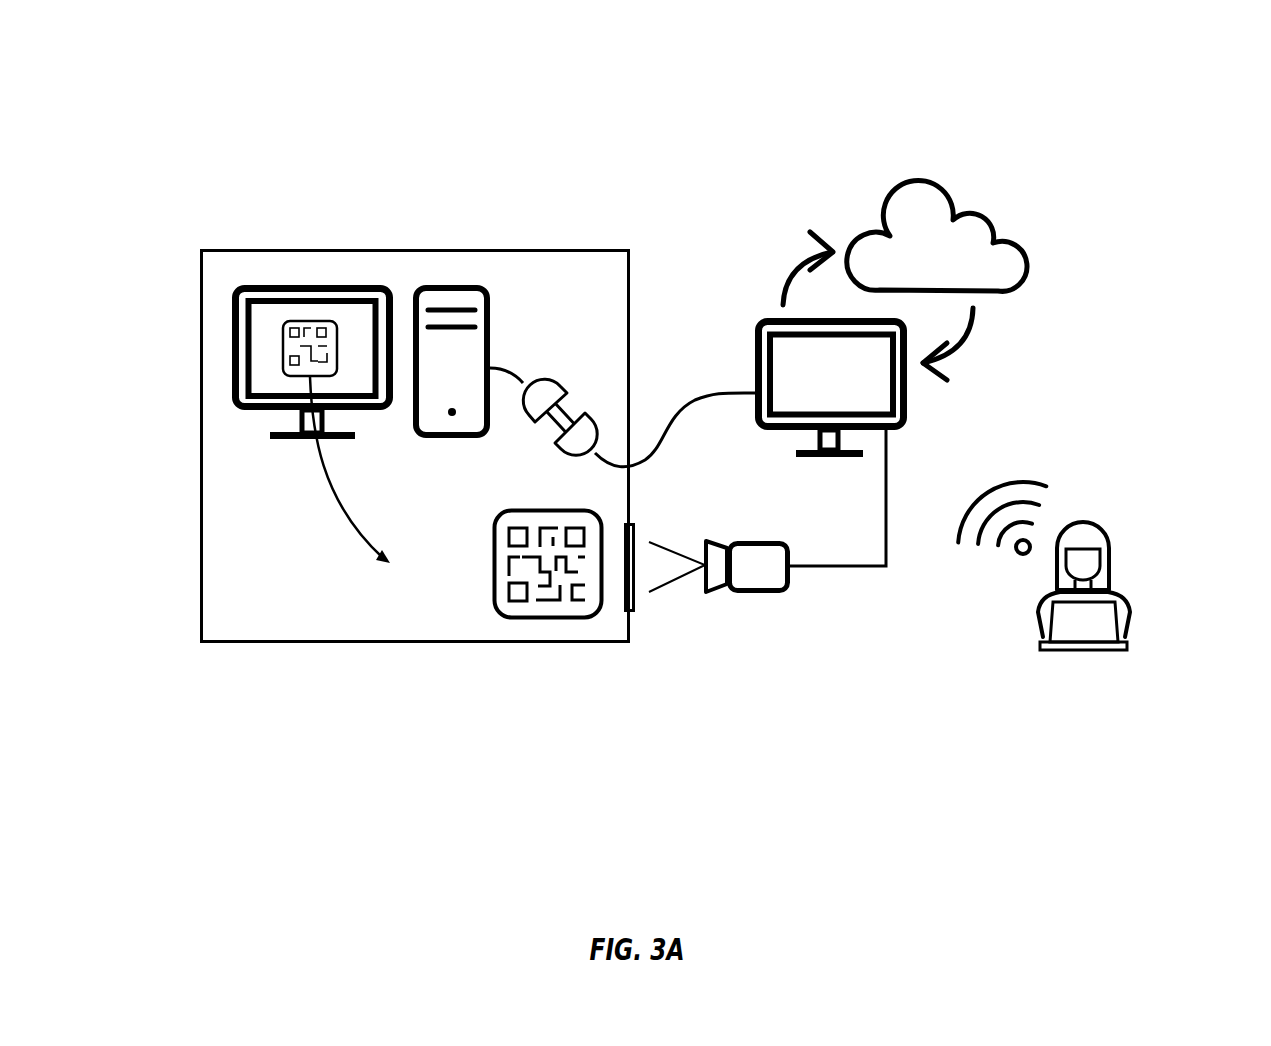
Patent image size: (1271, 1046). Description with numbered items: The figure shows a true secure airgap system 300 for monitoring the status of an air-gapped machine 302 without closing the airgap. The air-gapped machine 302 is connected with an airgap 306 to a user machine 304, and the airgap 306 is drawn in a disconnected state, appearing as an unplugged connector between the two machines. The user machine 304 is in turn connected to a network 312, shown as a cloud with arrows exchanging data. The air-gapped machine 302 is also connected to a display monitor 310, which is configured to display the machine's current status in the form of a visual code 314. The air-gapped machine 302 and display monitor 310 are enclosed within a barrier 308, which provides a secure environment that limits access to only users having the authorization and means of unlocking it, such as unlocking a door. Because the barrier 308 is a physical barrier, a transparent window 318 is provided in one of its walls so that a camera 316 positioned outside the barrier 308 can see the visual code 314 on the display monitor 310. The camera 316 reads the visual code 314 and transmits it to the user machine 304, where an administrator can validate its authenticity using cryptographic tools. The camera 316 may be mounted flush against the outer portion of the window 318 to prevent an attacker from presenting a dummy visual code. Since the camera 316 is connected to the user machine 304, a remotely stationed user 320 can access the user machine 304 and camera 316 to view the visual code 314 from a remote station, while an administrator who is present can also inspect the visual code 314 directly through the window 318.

The true secure airgap system 300 is at (376, 119).
The air-gapped machine 302 is at (493, 308).
The user machine 304 is at (756, 333).
The airgap 306 is at (590, 394).
The barrier 308 is at (201, 268).
The display monitor 310 is at (230, 338).
The network 312 is at (1022, 260).
The visual code 314 is at (493, 553).
The camera 316 is at (753, 541).
The window 318 is at (638, 527).
The user 320 is at (1110, 543).